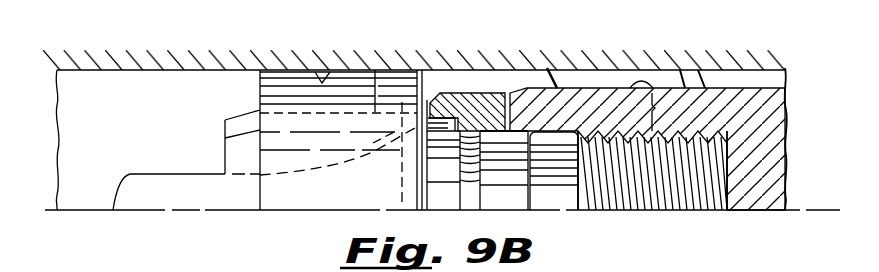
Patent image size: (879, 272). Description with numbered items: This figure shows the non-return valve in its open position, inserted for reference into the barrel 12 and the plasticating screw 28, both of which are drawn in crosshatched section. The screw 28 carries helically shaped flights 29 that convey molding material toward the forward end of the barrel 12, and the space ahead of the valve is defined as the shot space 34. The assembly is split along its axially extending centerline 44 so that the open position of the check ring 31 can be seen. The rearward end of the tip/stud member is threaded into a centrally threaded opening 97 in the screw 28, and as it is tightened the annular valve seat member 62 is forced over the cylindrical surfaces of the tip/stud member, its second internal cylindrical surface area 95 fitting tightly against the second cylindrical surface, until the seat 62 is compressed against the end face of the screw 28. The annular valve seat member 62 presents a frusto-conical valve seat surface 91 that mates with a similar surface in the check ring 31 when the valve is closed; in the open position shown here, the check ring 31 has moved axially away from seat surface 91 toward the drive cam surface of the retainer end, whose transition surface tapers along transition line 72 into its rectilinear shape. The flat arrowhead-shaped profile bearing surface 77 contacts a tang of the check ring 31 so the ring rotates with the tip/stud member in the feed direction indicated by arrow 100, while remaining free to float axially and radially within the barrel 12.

The barrel 12 is at (86, 58).
The shot space 34 is at (167, 102).
The profile bearing surface 77 is at (152, 173).
The axially extending centerline 44 is at (57, 212).
The check ring 31 is at (325, 80).
The transition line 72 is at (375, 72).
The frusto-conical valve seat surface 91 is at (413, 130).
The second internal cylindrical surface area 95 is at (452, 117).
The annular valve seat member 62 is at (480, 92).
The flights 29 is at (530, 82).
The centrally threaded opening 97 is at (557, 133).
The arrow 100 is at (624, 163).
The plasticating screw 28 is at (737, 88).